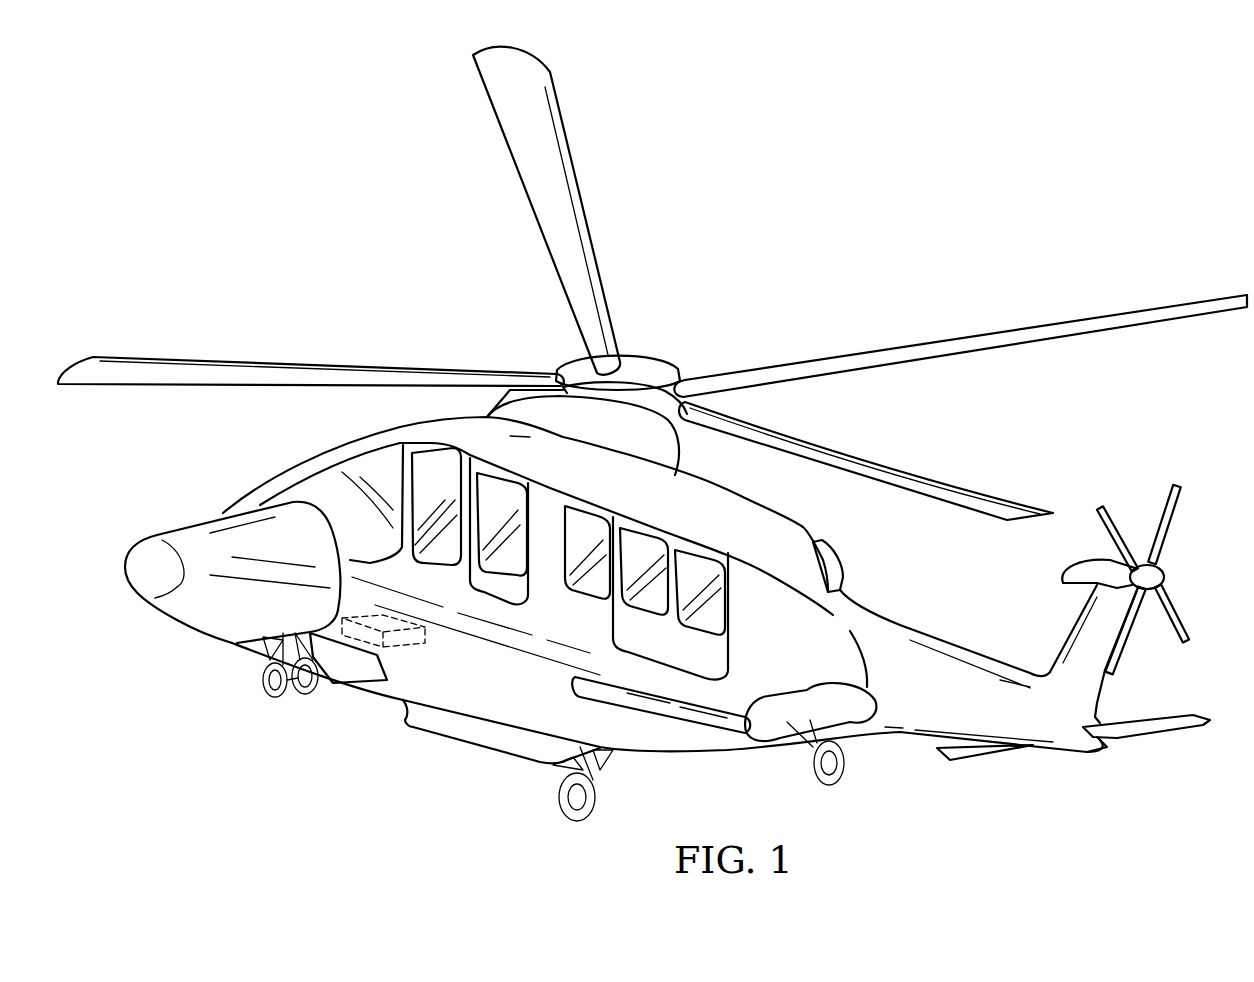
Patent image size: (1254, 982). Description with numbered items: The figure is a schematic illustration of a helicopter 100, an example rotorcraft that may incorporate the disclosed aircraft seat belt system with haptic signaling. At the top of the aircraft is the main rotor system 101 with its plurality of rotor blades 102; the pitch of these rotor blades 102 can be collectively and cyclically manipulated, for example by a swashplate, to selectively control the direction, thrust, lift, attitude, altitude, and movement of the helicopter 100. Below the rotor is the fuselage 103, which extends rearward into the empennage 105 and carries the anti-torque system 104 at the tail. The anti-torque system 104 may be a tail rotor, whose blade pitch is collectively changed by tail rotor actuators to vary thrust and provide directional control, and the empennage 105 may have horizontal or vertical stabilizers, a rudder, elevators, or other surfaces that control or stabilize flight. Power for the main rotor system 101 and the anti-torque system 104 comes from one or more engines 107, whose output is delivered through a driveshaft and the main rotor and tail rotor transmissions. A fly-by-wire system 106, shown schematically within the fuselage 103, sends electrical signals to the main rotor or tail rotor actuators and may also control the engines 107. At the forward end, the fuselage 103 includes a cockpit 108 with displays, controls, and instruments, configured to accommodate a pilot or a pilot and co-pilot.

The helicopter 100 is at (408, 192).
The main rotor system 101 is at (675, 318).
The rotor blades 102 is at (330, 362).
The fuselage 103 is at (397, 692).
The anti-torque system 104 is at (1172, 527).
The empennage 105 is at (910, 727).
The fly-by-wire (FBW) system 106 is at (393, 648).
The engines 107 is at (828, 530).
The cockpit 108 is at (262, 450).